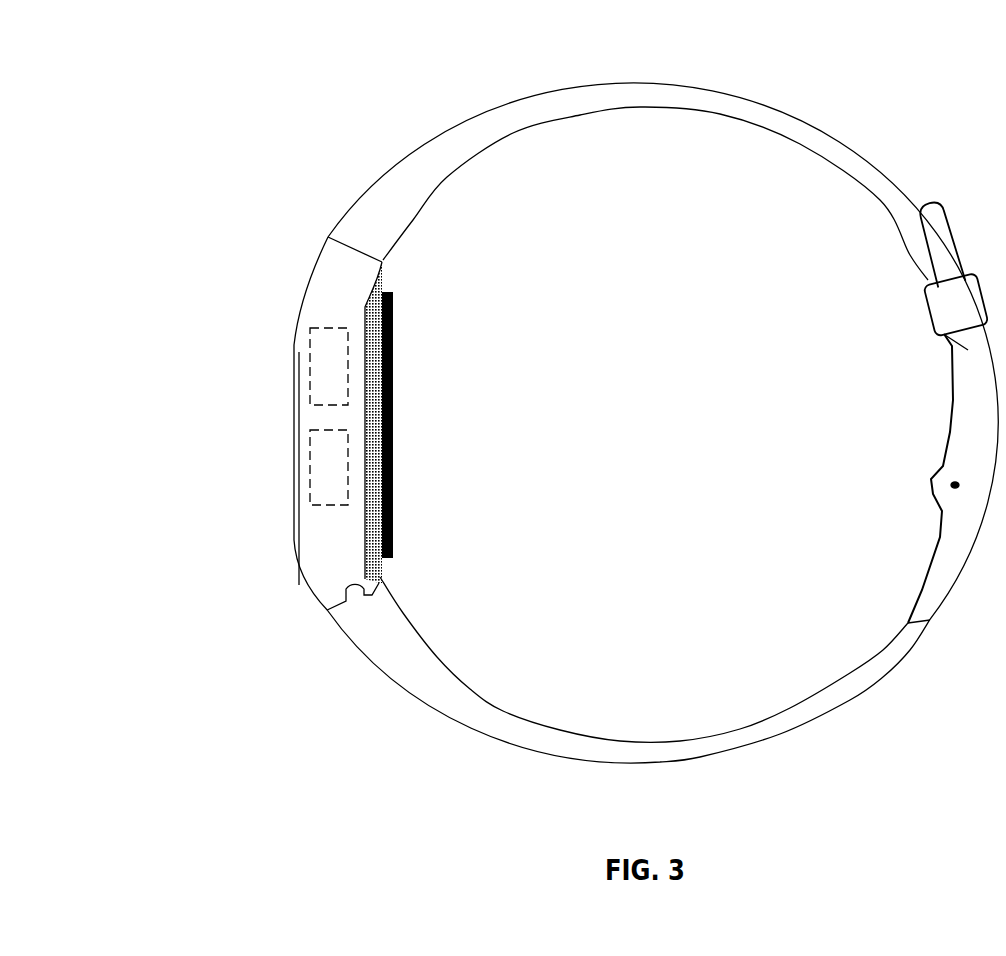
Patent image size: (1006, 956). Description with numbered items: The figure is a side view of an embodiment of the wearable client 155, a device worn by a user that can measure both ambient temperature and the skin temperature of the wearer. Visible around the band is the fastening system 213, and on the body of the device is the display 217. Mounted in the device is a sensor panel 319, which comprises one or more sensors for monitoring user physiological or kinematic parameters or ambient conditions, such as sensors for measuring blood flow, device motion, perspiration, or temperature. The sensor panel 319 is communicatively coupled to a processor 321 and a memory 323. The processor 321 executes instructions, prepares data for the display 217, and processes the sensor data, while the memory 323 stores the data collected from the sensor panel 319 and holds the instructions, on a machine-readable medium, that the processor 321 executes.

The wearable client 155 is at (283, 86).
The fastening system 213 is at (567, 118).
The display 217 is at (312, 423).
The sensor panel 319 is at (393, 389).
The processor 321 is at (310, 363).
The memory 323 is at (310, 478).